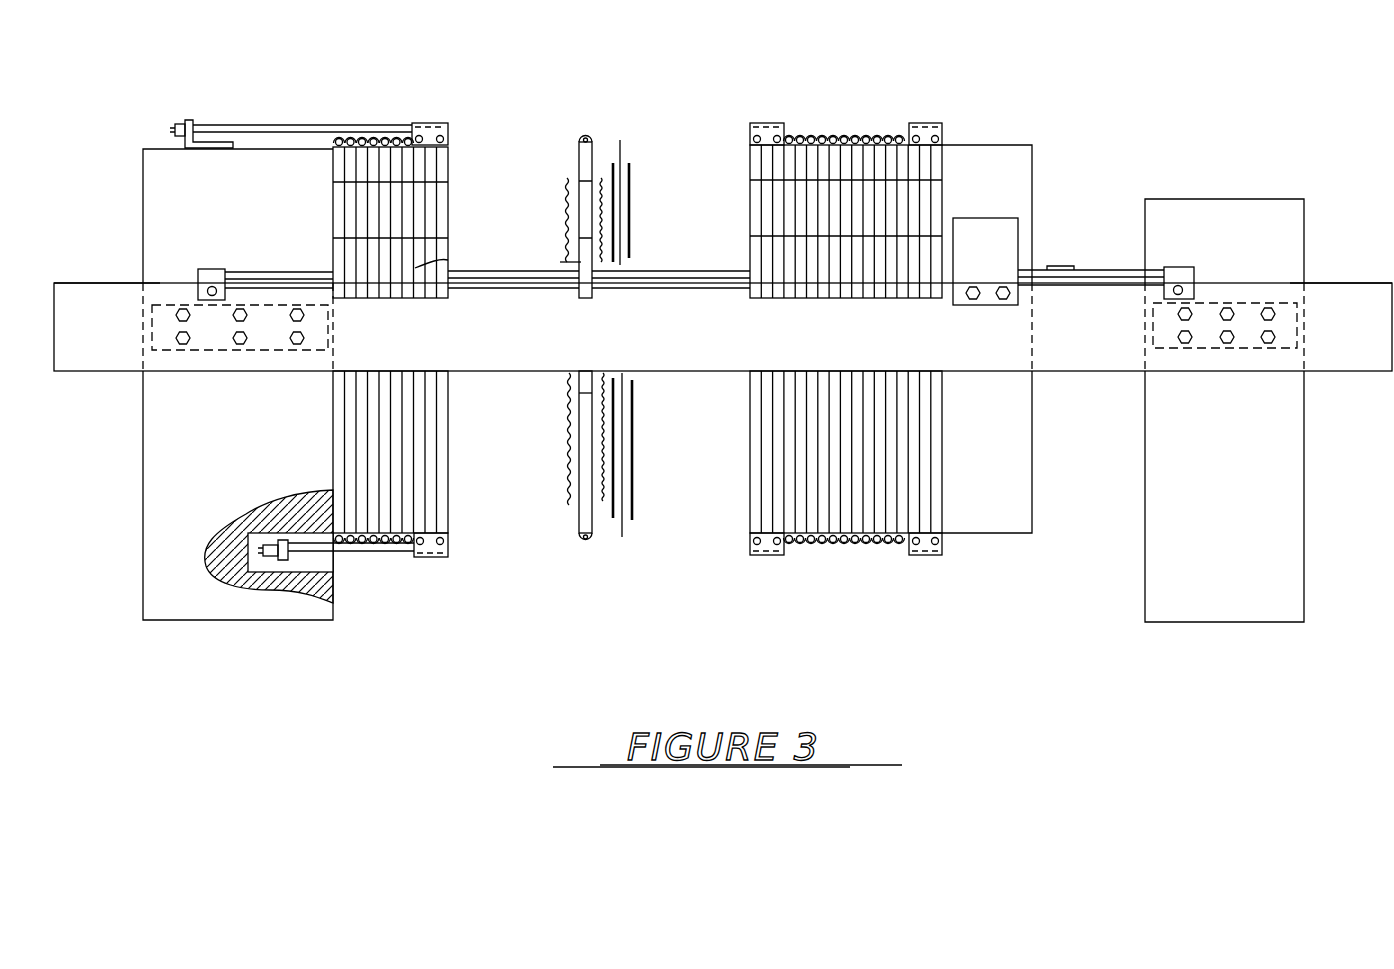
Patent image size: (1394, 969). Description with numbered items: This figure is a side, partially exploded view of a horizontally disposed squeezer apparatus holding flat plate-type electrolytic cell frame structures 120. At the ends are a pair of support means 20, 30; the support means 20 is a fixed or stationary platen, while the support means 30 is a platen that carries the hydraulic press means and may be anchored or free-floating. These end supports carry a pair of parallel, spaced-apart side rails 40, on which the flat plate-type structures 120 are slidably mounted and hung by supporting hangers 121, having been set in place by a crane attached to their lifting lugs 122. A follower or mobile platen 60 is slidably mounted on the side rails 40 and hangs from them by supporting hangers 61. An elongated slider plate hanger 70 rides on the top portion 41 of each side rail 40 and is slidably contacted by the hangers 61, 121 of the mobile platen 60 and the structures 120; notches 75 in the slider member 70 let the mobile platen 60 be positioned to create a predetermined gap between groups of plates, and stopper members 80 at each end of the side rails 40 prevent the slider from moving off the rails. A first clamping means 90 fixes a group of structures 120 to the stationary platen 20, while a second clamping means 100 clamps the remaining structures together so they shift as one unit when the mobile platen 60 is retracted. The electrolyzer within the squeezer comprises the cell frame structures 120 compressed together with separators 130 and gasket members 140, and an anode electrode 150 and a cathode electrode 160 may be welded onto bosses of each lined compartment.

The support means 20 is at (190, 188).
The support means 30 is at (1220, 224).
The side rails 40 is at (124, 340).
The top portion 41 is at (100, 283).
The mobile platen 60 is at (984, 145).
The supporting hangers 61 is at (994, 246).
The slider plate hanger 70 is at (702, 270).
The notches 75 is at (1058, 267).
The stopper members 80 is at (200, 276).
The first clamping means 90 is at (333, 105).
The second clamping means 100 is at (812, 103).
The flat plate-type structures 120 is at (594, 142).
The supporting hangers 121 is at (562, 260).
The lifting lugs 122 is at (583, 135).
The separators 130 is at (620, 164).
The gasket members 140 is at (632, 496).
The anode electrode 150 is at (603, 484).
The cathode electrode 160 is at (568, 466).